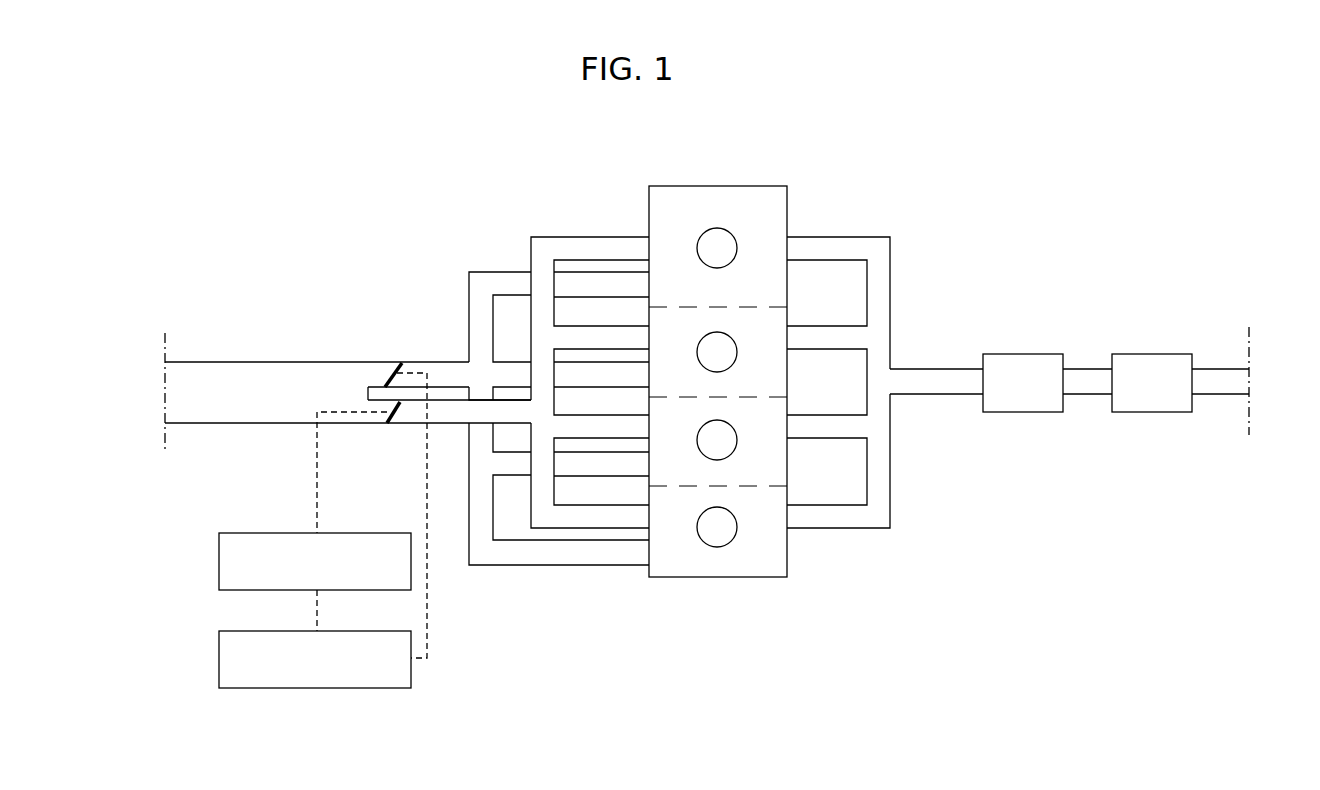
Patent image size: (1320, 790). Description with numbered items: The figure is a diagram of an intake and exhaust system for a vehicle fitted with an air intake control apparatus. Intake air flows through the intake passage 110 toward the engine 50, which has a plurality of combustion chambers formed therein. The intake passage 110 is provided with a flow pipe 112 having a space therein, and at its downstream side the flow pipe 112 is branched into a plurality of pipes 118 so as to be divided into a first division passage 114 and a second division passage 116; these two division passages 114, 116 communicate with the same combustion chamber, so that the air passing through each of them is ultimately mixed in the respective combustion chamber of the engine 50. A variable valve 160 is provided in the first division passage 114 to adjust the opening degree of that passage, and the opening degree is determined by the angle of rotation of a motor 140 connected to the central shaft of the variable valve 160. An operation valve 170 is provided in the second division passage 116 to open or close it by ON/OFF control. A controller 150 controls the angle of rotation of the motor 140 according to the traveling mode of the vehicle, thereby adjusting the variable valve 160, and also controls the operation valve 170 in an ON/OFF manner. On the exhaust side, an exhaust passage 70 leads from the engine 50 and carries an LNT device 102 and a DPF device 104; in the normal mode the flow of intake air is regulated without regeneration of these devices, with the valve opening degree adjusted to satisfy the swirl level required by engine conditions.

The engine 50 is at (718, 205).
The exhaust passage 70 is at (924, 368).
The LNT device 102 is at (1025, 353).
The DPF device 104 is at (1147, 353).
The intake passage 110 is at (326, 346).
The flow pipe 112 is at (234, 385).
The first division passage 114 is at (453, 416).
The second division passage 116 is at (518, 370).
The pipes 118 is at (577, 222).
The motor 140 is at (219, 566).
The controller 150 is at (219, 663).
The variable valve 160 is at (388, 425).
The operation valve 170 is at (398, 362).